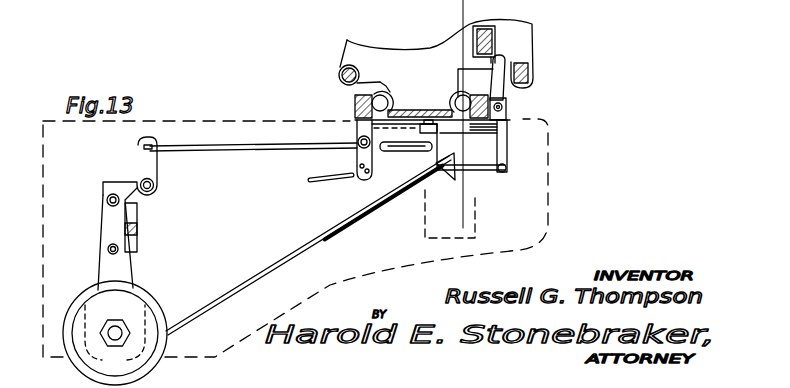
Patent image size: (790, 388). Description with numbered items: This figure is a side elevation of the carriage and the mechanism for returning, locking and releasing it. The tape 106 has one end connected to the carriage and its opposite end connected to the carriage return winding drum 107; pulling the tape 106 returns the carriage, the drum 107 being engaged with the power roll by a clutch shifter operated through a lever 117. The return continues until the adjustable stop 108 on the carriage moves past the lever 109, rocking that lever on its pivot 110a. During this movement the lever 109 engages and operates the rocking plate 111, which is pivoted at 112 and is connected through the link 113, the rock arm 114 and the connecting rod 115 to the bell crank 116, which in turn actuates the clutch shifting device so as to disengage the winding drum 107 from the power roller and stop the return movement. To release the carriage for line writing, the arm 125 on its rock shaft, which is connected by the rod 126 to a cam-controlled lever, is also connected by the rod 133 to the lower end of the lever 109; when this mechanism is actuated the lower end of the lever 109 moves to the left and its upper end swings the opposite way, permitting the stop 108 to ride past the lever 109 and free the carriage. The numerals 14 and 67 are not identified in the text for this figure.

The section line of FIG. 14 is at (459, 13).
The lever arm 67 is at (345, 63).
The tape 106 is at (307, 250).
The carriage return winding drum 107 is at (151, 303).
The adjustable stop 108 is at (496, 41).
The lever 109 is at (506, 92).
The pivot 110a is at (507, 107).
The rocking plate 111 is at (487, 132).
The pivot 112 is at (487, 126).
The link 113 is at (466, 129).
The rock arm 114 is at (438, 111).
The connecting rod 115 is at (256, 149).
The bell crank 116 is at (140, 161).
The lever 117 is at (138, 229).
The arm 125 is at (358, 160).
The rod 126 is at (328, 181).
The rod 133 is at (405, 165).